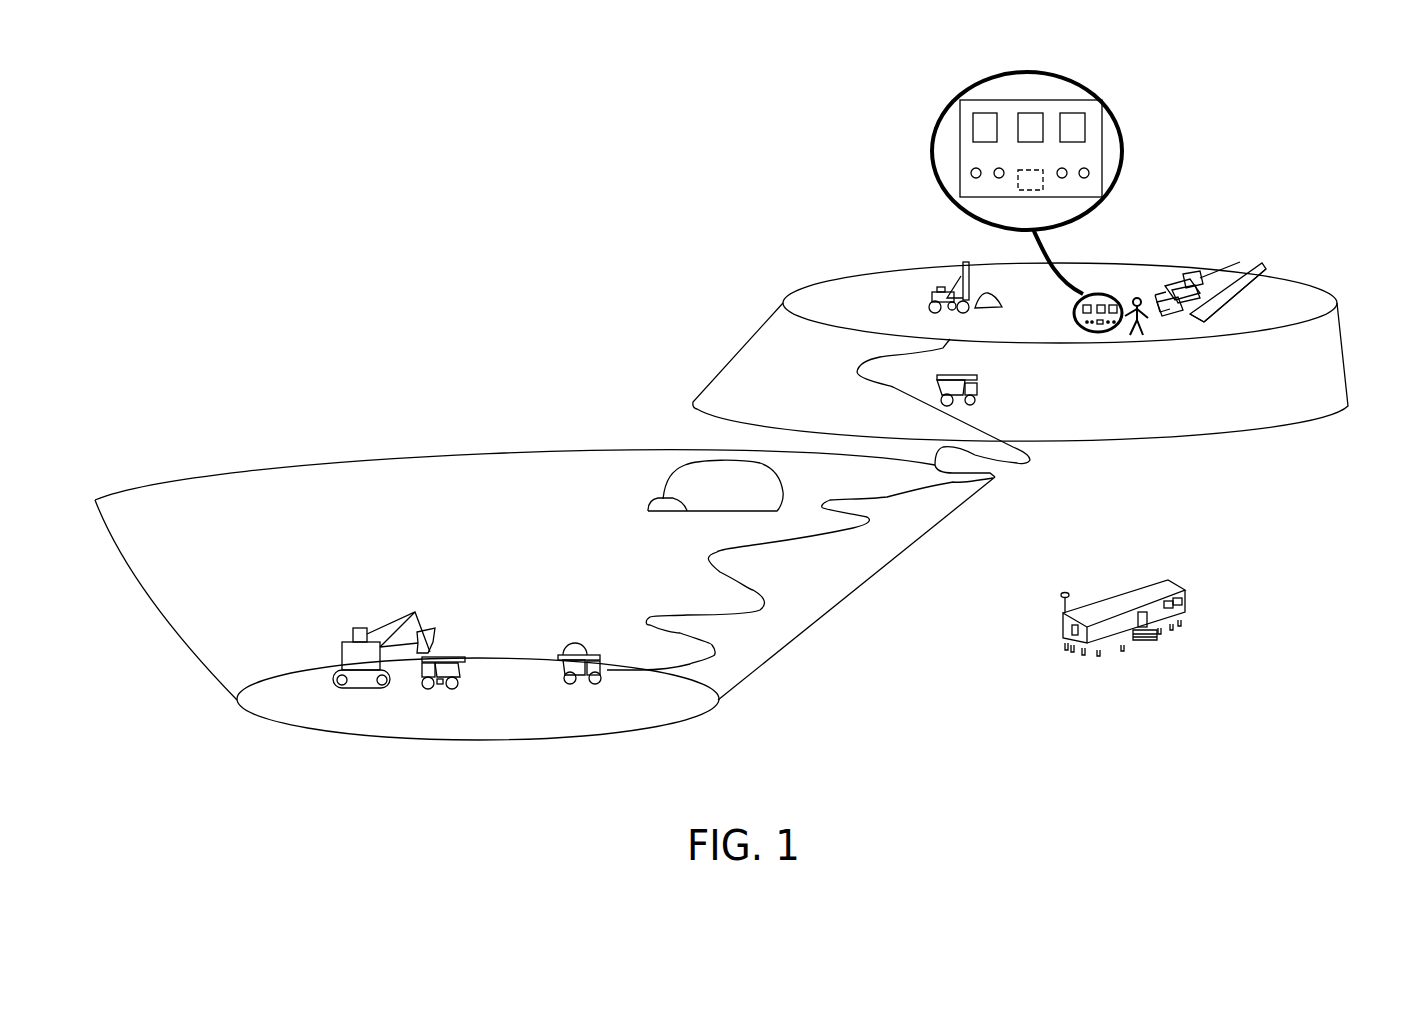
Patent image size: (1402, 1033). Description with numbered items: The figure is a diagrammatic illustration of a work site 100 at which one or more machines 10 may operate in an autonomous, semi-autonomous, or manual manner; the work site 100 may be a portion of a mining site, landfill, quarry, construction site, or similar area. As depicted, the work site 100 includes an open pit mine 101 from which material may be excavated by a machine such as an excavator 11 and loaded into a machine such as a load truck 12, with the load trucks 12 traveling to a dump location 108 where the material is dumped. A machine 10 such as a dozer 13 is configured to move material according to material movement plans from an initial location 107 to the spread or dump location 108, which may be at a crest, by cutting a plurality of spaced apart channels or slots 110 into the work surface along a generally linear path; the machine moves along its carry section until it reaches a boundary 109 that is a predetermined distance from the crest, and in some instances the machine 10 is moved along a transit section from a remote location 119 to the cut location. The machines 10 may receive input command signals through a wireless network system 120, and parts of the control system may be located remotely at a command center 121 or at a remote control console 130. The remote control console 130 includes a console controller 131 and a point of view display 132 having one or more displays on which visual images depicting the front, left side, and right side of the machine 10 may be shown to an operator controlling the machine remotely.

The work site 100 is at (285, 290).
The open pit mine 101 is at (410, 448).
The machine 10 is at (312, 592).
The excavator 11 is at (342, 652).
The load truck 12 is at (563, 658).
The dozer 13 is at (1173, 287).
The initial location 107 is at (1187, 325).
The dump location 108 is at (1260, 265).
The boundary 109 is at (1293, 282).
The slots 110 is at (1213, 278).
The remote location 119 is at (1024, 325).
The wireless network system 120 is at (1064, 593).
The command center 121 is at (1133, 598).
The remote control console 130 is at (995, 92).
The console controller 131 is at (1032, 188).
The point of view display 132 is at (985, 130).